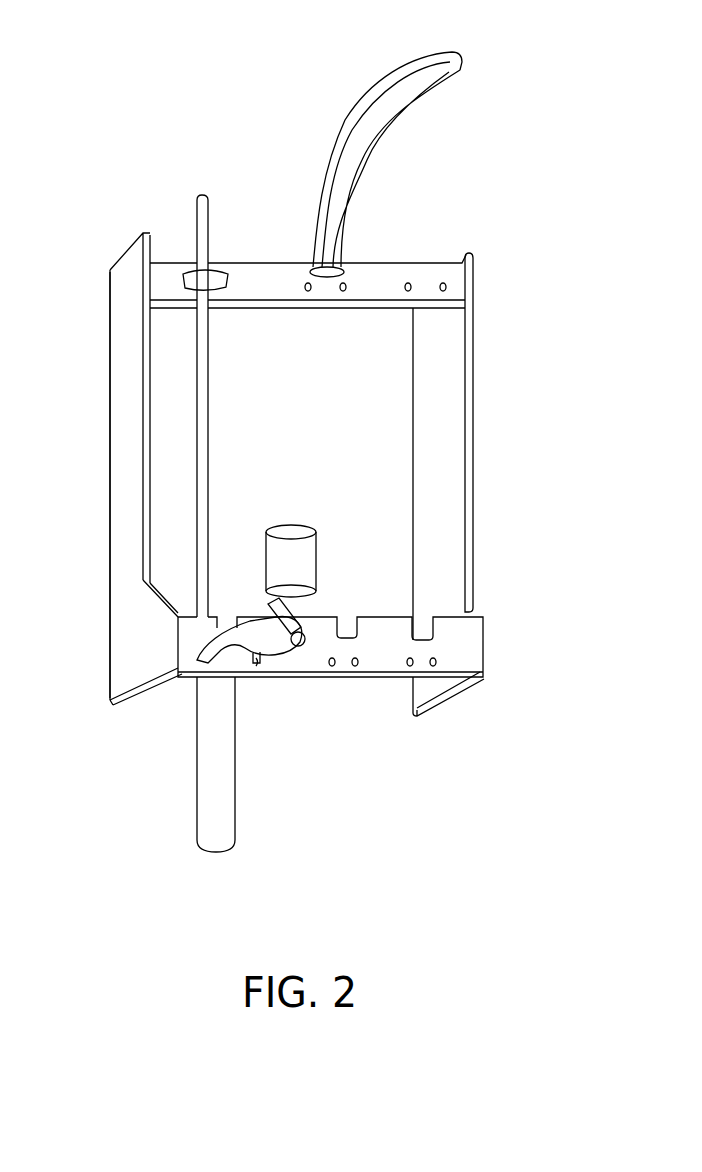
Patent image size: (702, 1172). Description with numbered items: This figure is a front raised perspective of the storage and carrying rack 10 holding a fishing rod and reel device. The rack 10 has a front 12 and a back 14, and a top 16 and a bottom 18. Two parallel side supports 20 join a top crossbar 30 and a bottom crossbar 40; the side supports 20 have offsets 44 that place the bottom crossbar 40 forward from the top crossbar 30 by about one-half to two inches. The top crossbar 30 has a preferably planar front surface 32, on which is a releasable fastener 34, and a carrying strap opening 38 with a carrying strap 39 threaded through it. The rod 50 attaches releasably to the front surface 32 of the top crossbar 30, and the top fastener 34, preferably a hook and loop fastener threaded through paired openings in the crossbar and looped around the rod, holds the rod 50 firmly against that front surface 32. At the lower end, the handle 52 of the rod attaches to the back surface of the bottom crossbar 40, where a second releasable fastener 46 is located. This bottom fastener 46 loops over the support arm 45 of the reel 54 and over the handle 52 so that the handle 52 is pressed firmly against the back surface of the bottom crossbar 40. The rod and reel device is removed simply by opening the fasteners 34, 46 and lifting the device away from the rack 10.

The storage and carrying rack 10 is at (500, 186).
The front 12 is at (520, 484).
The back 14 is at (105, 653).
The top 16 is at (118, 238).
The bottom 18 is at (466, 700).
The side support 20 is at (115, 512).
The top crossbar 30 is at (398, 262).
The front surface 32 is at (258, 268).
The releasable fastener 34 is at (215, 266).
The carrying strap opening 38 is at (331, 262).
The carrying strap 39 is at (400, 58).
The bottom crossbar 40 is at (345, 677).
The offset 44 is at (154, 598).
The support arm 45 is at (273, 640).
The releasable fastener 46 is at (203, 640).
The rod 50 is at (210, 230).
The handle 52 is at (194, 764).
The reel 54 is at (308, 546).